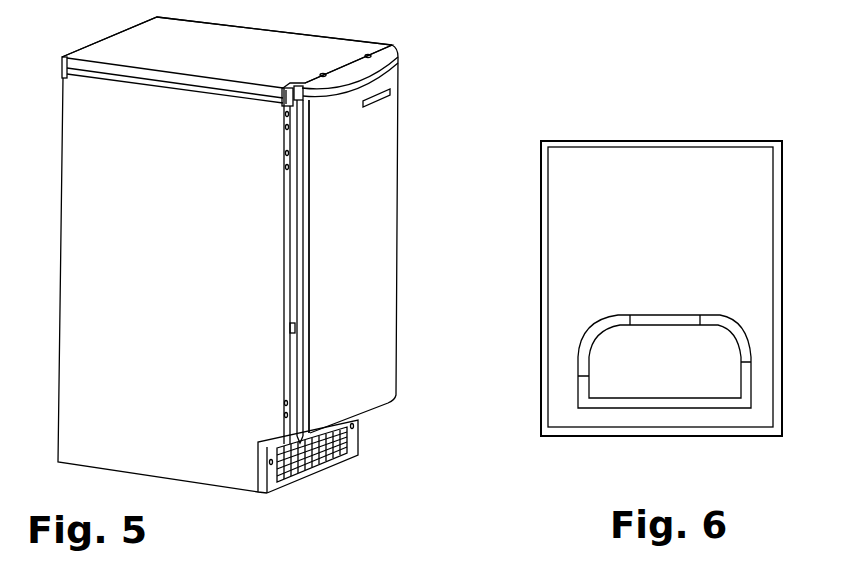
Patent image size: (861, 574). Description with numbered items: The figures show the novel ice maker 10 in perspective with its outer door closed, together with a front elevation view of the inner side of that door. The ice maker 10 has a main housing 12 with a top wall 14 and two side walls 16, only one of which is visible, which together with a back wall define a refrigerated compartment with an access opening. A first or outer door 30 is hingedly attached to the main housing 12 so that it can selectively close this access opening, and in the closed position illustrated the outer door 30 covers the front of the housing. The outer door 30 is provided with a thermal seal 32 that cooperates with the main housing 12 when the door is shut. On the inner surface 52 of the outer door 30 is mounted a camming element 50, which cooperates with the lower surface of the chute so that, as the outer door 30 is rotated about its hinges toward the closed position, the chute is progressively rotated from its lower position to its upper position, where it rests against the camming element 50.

In FIG. 5, the ice maker 10 is at (444, 87).
In FIG. 5, the main housing 12 is at (97, 42).
In FIG. 5, the top wall 14 is at (206, 66).
In FIG. 5, the side wall 16 is at (124, 151).
In FIG. 5, the outer door 30 is at (382, 197).
In FIG. 6, the outer door 30 is at (643, 170).
In FIG. 6, the thermal seal 32 is at (708, 143).
In FIG. 6, the camming element 50 is at (625, 373).
In FIG. 6, the inner surface 52 is at (656, 243).